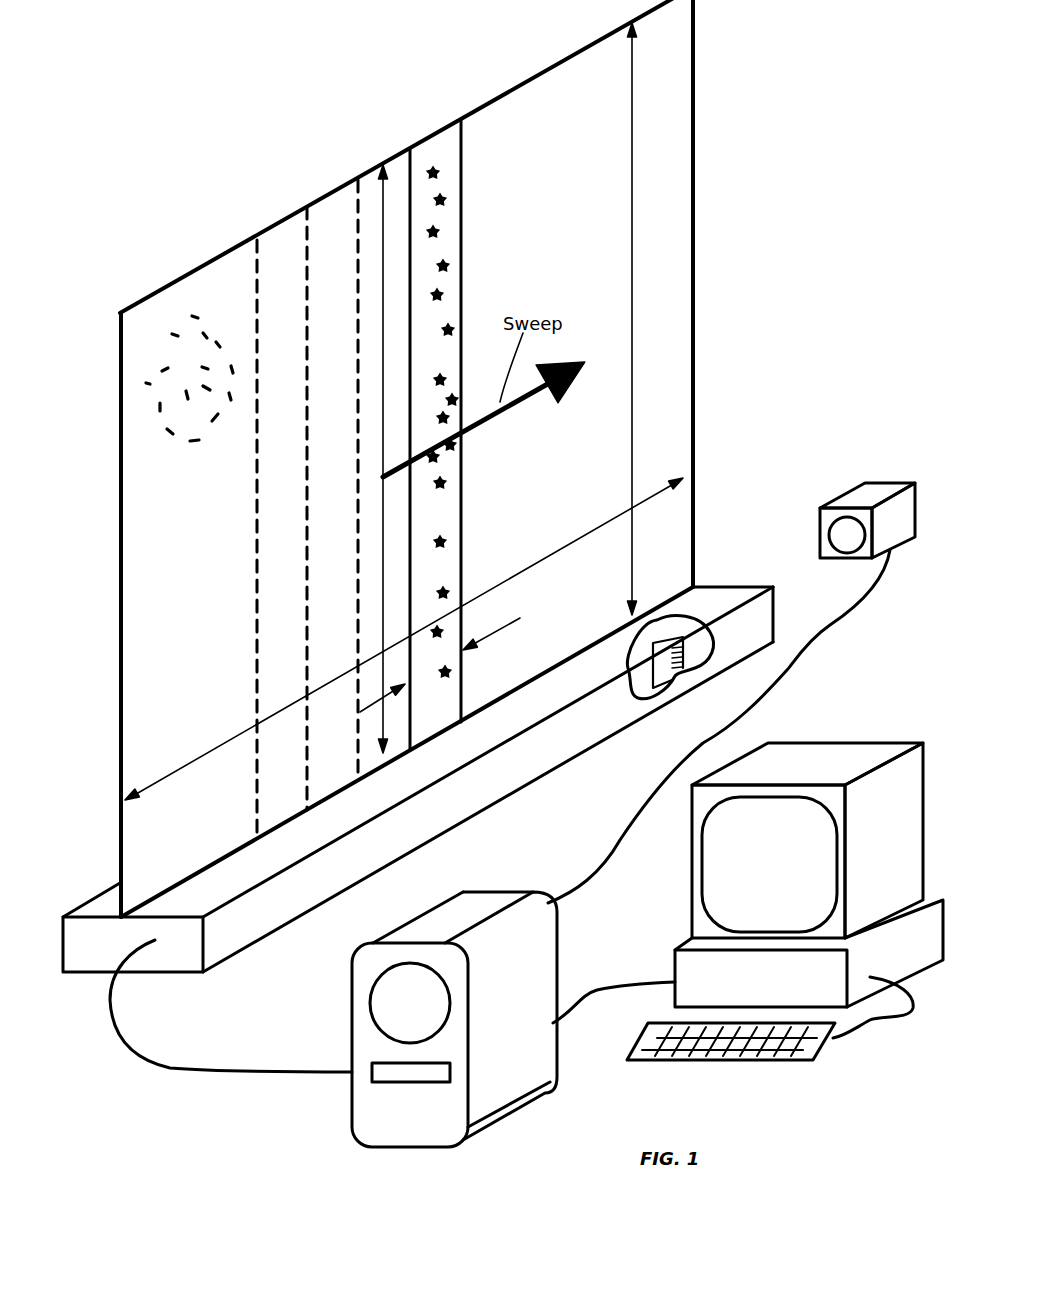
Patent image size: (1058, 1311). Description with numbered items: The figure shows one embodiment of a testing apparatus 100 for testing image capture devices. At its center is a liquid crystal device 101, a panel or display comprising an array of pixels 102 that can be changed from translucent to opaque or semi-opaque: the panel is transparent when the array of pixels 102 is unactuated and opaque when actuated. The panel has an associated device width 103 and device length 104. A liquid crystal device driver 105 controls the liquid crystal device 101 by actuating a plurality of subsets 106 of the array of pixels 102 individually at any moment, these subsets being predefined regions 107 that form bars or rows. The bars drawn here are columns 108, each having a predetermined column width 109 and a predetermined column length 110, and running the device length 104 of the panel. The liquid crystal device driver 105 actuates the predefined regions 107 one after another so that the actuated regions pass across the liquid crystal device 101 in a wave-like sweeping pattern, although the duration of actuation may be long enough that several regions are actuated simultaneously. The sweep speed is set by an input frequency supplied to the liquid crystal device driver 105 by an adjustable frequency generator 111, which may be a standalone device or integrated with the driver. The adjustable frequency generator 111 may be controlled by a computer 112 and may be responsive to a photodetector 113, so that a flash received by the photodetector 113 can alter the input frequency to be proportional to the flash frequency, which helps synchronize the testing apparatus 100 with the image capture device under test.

The testing apparatus 100 is at (795, 73).
The liquid crystal device 101 is at (668, 300).
The array of pixels 102 is at (185, 355).
The device width 103 is at (600, 522).
The device length 104 is at (632, 205).
The liquid crystal device driver 105 is at (697, 647).
The subsets of the array of pixels 106 is at (277, 243).
The predefined regions 107 is at (463, 162).
The columns 108 is at (257, 283).
The predetermined column width 109 is at (492, 630).
The predetermined column length 110 is at (383, 518).
The adjustable frequency generator 111 is at (368, 1035).
The computer 112 is at (792, 758).
The photodetector 113 is at (860, 495).